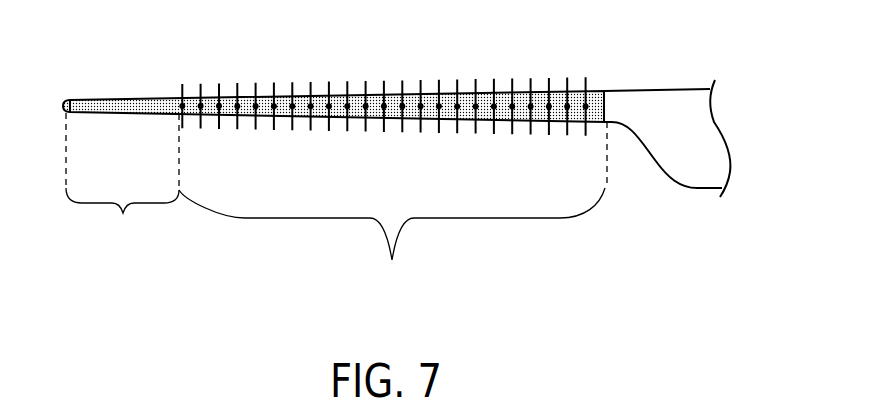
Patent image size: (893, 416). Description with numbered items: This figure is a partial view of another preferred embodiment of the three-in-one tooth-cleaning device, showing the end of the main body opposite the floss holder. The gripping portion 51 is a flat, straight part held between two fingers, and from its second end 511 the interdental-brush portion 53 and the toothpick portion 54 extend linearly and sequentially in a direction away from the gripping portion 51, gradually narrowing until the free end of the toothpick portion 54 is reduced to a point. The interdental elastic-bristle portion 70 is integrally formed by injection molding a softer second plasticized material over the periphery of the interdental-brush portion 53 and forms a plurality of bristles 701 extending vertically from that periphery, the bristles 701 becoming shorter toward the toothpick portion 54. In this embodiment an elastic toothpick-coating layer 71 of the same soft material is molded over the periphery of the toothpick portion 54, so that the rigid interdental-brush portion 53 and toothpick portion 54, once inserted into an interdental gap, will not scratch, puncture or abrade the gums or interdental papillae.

The gripping portion 51 is at (690, 86).
The second end of the gripping portion 511 is at (627, 110).
The interdental-brush portion 53 is at (393, 201).
The toothpick portion 54 is at (122, 179).
The interdental elastic-bristle portion 70 is at (279, 96).
The bristles 701 is at (510, 105).
The elastic toothpick-coating layer 71 is at (128, 100).